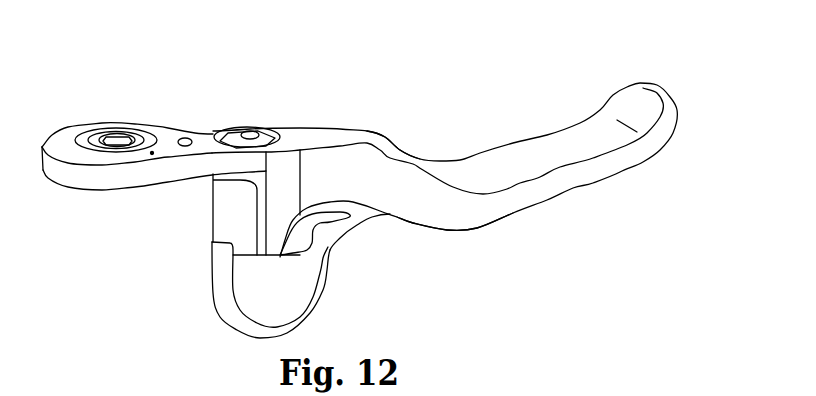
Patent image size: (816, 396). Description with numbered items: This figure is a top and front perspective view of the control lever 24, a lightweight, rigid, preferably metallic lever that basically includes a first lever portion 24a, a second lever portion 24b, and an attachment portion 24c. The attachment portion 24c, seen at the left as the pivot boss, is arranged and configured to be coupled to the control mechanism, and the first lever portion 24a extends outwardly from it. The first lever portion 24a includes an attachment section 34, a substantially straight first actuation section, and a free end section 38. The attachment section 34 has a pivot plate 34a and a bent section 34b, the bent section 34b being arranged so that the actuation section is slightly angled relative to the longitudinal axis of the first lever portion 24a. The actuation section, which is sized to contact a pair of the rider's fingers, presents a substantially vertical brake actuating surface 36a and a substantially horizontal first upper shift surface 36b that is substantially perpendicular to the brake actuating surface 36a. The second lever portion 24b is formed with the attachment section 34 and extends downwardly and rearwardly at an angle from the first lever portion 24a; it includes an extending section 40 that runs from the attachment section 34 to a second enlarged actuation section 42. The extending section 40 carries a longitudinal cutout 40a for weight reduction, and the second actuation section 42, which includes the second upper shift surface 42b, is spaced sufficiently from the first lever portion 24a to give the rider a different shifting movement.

The control lever 24 is at (400, 90).
The first lever portion 24a is at (439, 128).
The second lever portion 24b is at (351, 277).
The attachment portion 24c is at (119, 110).
The attachment section 34 is at (314, 100).
The pivot plate 34a is at (208, 138).
The bent section 34b is at (393, 170).
The brake actuating surface 36a is at (568, 164).
The first upper shift surface 36b is at (517, 198).
The free end section 38 is at (633, 83).
The extending section 40 is at (336, 248).
The longitudinal cutout 40a is at (380, 214).
The second enlarged actuation section 42 is at (322, 300).
The second upper shift surface 42b is at (297, 307).